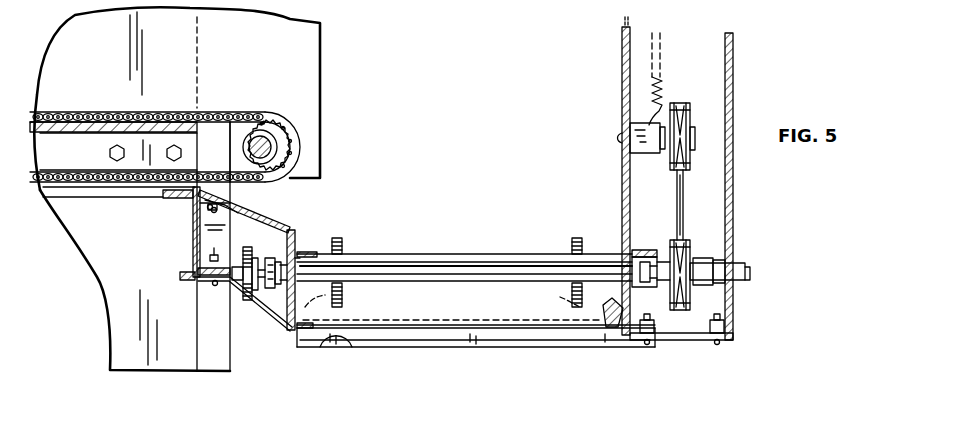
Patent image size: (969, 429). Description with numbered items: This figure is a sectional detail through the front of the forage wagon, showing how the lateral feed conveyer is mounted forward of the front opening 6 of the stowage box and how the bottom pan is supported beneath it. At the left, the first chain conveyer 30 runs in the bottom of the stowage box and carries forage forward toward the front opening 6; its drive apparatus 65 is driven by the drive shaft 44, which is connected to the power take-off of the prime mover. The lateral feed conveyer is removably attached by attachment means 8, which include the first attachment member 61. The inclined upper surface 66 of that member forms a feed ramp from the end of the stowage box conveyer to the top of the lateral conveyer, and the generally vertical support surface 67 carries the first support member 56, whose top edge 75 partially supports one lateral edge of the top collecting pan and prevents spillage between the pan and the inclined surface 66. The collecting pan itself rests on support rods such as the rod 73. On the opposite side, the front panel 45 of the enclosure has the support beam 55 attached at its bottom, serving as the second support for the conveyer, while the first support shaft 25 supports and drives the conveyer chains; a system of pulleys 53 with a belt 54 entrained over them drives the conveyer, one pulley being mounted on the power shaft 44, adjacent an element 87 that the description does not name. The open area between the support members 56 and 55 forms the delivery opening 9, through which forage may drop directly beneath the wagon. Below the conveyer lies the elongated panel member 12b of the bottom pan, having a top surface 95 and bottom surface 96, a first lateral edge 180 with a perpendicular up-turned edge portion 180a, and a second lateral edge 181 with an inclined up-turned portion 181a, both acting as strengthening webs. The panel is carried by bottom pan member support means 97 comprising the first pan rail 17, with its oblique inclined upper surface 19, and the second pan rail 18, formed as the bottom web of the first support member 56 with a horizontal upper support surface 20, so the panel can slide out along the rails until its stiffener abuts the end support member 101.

The front opening 6 is at (330, 77).
The first chain conveyer 30 is at (99, 110).
The first attachment member 61 is at (290, 222).
The inclined upper surface 66 is at (251, 217).
The vertical support surface 67 is at (297, 251).
The top edge of first support member 75 is at (313, 248).
The up-turned edge portion 180a is at (360, 264).
The support rod 73 is at (463, 258).
The first lateral edge 180 is at (343, 310).
The second lateral edge 181 is at (588, 318).
The up-turned portion 181a is at (620, 298).
The delivery opening 9 is at (455, 325).
The support member 101 is at (467, 347).
The bottom surface 96 is at (493, 323).
The top surface 95 is at (473, 318).
The elongated panel member 12b is at (552, 330).
The inclined upper surface 19 is at (617, 309).
The first pan rail 17 is at (607, 320).
The first support member 56 is at (298, 340).
The attachment means 8 is at (283, 334).
The second pan rail 18 is at (318, 337).
The horizontal upper support surface 20 is at (333, 327).
The front panel 45 is at (622, 63).
The first support shaft 25 is at (662, 77).
The pulleys 53 is at (691, 112).
The belt 54 is at (681, 222).
The bearing block 87 is at (640, 250).
The drive shaft 44 is at (750, 270).
The support beam 55 is at (642, 316).
The bottom pan member support means 97 is at (613, 344).
The drive apparatus 65 is at (498, 2).